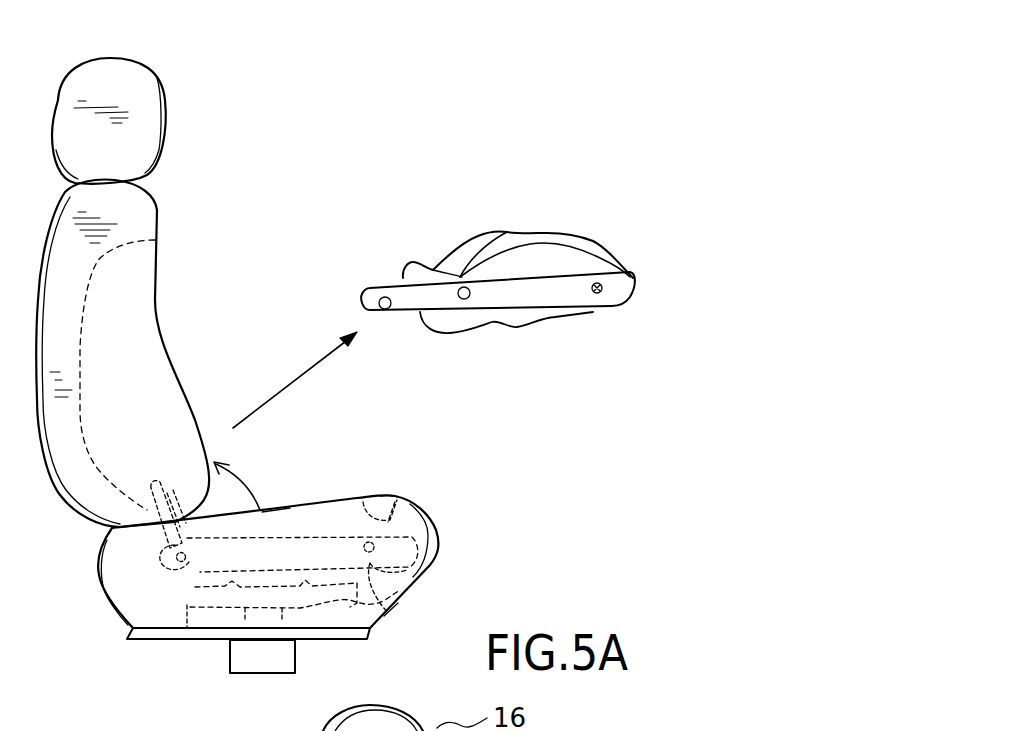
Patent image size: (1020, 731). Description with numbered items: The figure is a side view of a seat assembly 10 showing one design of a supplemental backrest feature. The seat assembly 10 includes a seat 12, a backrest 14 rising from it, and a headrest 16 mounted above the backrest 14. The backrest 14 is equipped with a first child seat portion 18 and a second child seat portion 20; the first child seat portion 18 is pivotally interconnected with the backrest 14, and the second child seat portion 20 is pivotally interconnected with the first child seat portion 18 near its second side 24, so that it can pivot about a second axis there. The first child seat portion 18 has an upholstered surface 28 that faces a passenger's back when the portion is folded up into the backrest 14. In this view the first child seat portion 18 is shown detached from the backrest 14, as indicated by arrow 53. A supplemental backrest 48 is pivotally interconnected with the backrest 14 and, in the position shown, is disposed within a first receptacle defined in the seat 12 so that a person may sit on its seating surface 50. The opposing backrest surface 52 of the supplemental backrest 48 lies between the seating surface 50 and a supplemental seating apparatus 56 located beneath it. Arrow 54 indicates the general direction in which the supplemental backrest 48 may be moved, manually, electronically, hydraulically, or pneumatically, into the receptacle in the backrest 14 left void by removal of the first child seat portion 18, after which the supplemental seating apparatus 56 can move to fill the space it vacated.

The seat assembly 10 is at (718, 100).
The seat 12 is at (435, 530).
The backrest 14 is at (157, 212).
The headrest 16 is at (162, 100).
The first child seat portion 18 is at (633, 278).
The second child seat portion 20 is at (485, 230).
The second side of the first child seat portion 24 is at (597, 294).
The upholstered surface 28 is at (515, 327).
The supplemental backrest 48 is at (397, 498).
The seating surface 50 is at (277, 510).
The backrest surface 52 is at (390, 607).
The arrow 53 is at (287, 383).
The arrow 54 is at (240, 468).
The supplemental seating apparatus 56 is at (187, 640).